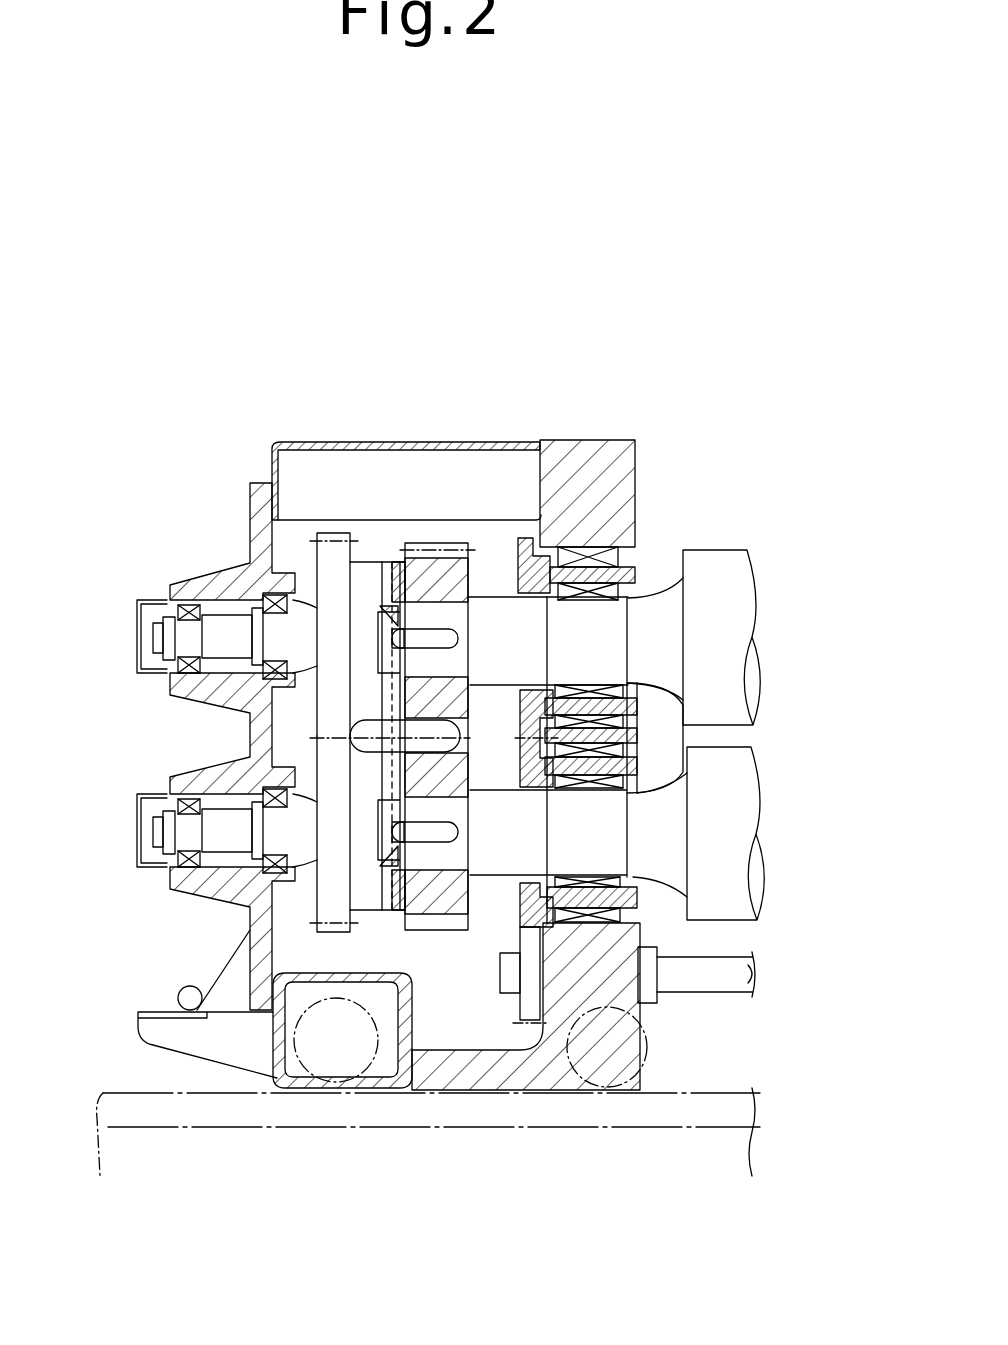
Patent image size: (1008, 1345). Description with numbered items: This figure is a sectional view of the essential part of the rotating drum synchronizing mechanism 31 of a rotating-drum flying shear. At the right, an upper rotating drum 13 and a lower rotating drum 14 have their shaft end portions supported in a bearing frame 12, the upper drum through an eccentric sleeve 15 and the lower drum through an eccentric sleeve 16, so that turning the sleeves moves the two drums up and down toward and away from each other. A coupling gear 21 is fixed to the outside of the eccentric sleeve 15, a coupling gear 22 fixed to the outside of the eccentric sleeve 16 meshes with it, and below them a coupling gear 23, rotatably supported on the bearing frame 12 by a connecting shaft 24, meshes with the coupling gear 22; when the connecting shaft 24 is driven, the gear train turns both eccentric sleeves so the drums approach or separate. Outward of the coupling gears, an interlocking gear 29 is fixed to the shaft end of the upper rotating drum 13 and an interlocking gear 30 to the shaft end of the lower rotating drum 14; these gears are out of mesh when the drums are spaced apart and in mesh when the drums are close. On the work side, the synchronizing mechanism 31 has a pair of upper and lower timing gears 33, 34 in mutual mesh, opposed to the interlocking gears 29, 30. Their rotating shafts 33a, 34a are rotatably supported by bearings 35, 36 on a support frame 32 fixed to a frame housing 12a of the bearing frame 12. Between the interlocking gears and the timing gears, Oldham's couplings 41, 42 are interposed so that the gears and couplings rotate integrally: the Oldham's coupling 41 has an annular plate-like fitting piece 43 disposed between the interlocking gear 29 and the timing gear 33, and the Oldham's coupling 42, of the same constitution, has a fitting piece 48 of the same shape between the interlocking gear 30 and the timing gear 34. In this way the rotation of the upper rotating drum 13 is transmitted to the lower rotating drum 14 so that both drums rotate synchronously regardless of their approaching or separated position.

The bearing frame 12 is at (635, 462).
The frame housing 12a is at (423, 518).
The upper rotating drum 13 is at (742, 602).
The lower rotating drum 14 is at (733, 800).
The eccentric sleeve 15 is at (635, 553).
The eccentric sleeve 16 is at (637, 880).
The coupling gear 21 is at (517, 540).
The coupling gear 22 is at (512, 1013).
The coupling gear 23 is at (545, 1010).
The connecting shaft 24 is at (735, 955).
The interlocking gear 29 is at (478, 563).
The interlocking gear 30 is at (500, 912).
The rotating drum synchronizing mechanism 31 is at (222, 555).
The support frame 32 is at (250, 920).
The upper timing gear 33 is at (330, 575).
The rotating shaft 33a is at (183, 640).
The lower timing gear 34 is at (333, 893).
The rotating shaft 34a is at (183, 832).
The bearing 35 is at (163, 600).
The bearing 36 is at (163, 787).
The Oldham's coupling 41 is at (393, 543).
The Oldham's coupling 42 is at (392, 926).
The fitting piece 43 is at (376, 607).
The fitting piece 48 is at (220, 962).